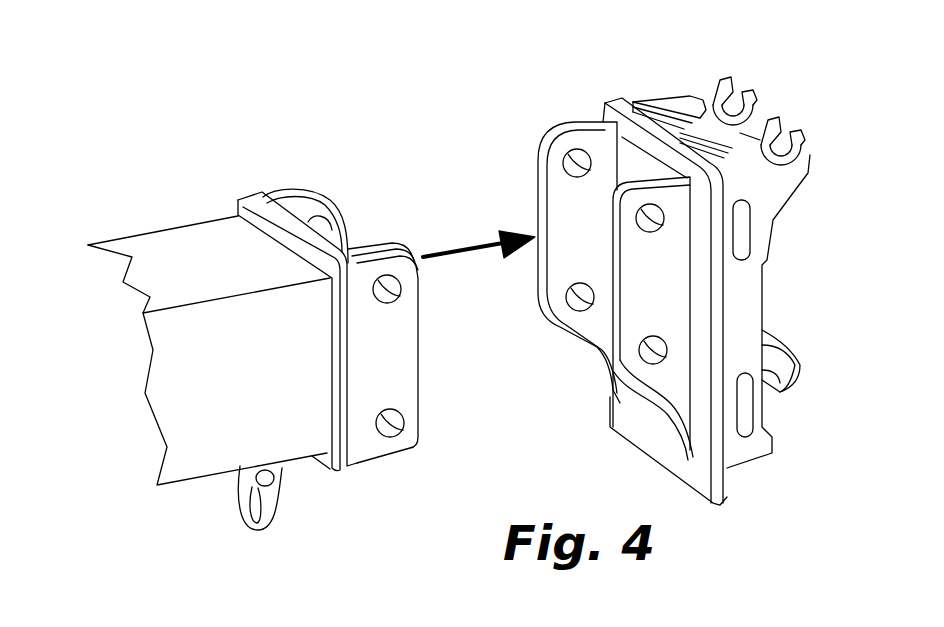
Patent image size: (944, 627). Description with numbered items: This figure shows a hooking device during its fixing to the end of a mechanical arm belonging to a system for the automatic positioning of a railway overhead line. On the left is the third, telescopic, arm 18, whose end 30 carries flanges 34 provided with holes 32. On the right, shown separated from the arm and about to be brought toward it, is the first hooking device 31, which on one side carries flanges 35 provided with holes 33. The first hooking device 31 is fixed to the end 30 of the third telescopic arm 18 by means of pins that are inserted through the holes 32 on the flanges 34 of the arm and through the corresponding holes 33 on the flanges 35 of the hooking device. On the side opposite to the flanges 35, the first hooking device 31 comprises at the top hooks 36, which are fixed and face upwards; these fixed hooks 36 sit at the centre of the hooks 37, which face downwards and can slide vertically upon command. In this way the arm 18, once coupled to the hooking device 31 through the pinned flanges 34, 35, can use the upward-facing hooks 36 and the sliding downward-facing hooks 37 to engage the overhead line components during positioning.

The third telescopic arm 18 is at (170, 257).
The end of the third telescopic arm 30 is at (333, 242).
The first hooking device 31 is at (716, 271).
The holes 32 is at (397, 431).
The holes 33 is at (663, 363).
The flanges 34 is at (419, 388).
The flanges 35 is at (650, 300).
The hooks 36 is at (808, 148).
The hooks 37 is at (797, 368).